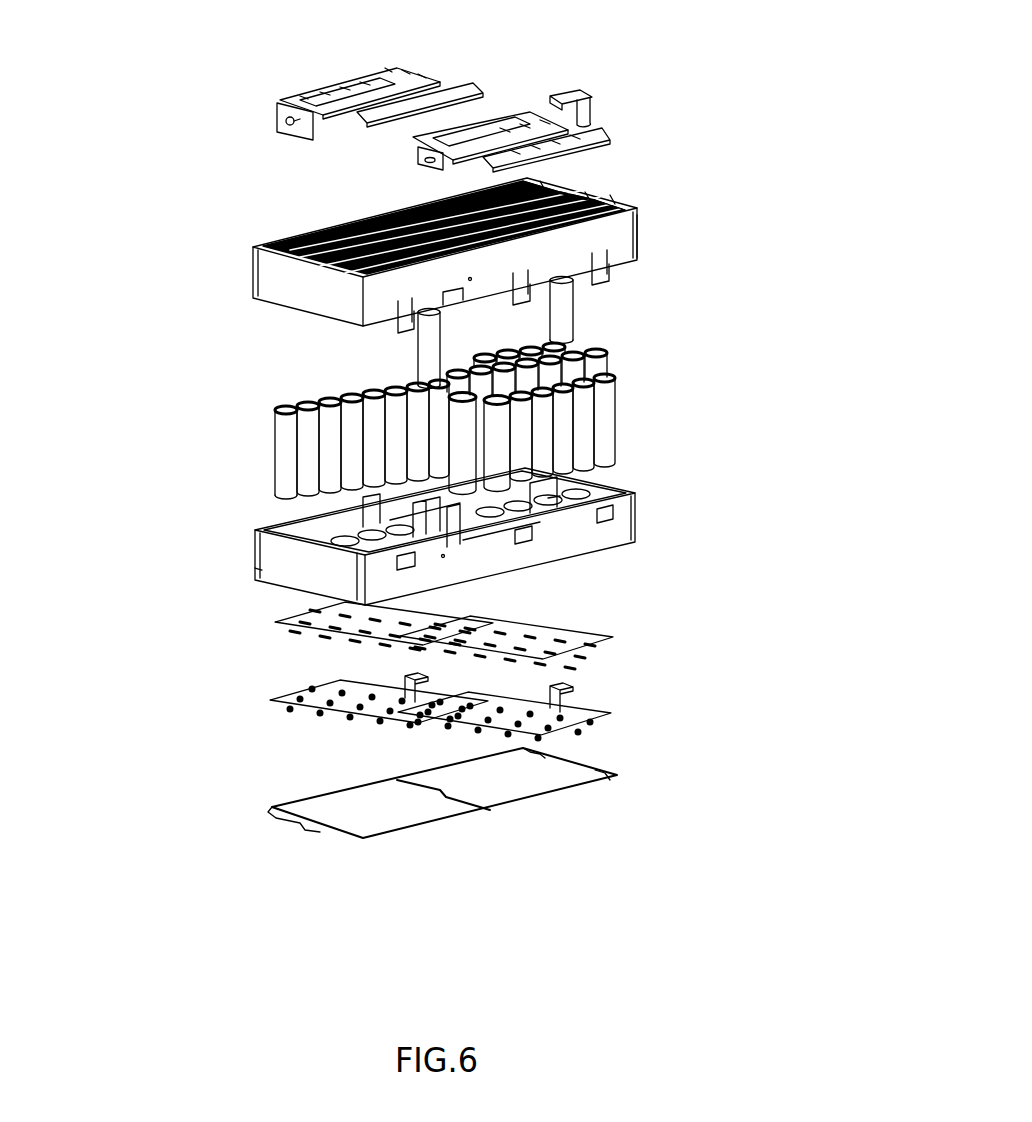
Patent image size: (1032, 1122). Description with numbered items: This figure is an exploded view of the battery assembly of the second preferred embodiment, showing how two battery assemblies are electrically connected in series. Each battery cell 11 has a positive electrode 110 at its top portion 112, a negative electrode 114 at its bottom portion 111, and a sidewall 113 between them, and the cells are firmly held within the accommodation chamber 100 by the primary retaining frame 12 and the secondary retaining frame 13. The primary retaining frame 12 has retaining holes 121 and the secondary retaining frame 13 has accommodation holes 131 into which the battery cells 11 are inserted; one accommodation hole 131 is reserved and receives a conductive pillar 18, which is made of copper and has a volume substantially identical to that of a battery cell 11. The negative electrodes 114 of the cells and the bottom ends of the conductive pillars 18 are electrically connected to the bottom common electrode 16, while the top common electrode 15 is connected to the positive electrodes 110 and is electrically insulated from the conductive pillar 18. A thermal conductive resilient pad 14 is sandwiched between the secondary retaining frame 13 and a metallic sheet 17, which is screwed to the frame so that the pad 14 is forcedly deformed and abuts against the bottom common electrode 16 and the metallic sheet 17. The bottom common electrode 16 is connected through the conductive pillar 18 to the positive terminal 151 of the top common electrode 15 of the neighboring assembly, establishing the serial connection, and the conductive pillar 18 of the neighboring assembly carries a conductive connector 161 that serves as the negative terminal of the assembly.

The accommodation chamber 100 is at (817, 325).
The battery cell 11 is at (92, 398).
The primary retaining frame 12 is at (456, 231).
The secondary retaining frame 13 is at (475, 530).
The thermal conductive resilient pad 14 is at (290, 702).
The top common electrode 15 is at (395, 102).
The bottom common electrode 16 is at (300, 622).
The metallic sheet 17 is at (318, 820).
The conductive pillar 18 is at (420, 365).
The positive electrode 110 is at (324, 393).
The bottom portion 111 is at (280, 494).
The top portion 112 is at (275, 410).
The sidewall 113 is at (278, 457).
The negative electrode 114 is at (275, 570).
The retaining hole 121 is at (633, 214).
The accommodation hole 131 is at (555, 500).
The positive terminal 151 is at (277, 107).
The conductive connector 161 is at (582, 96).